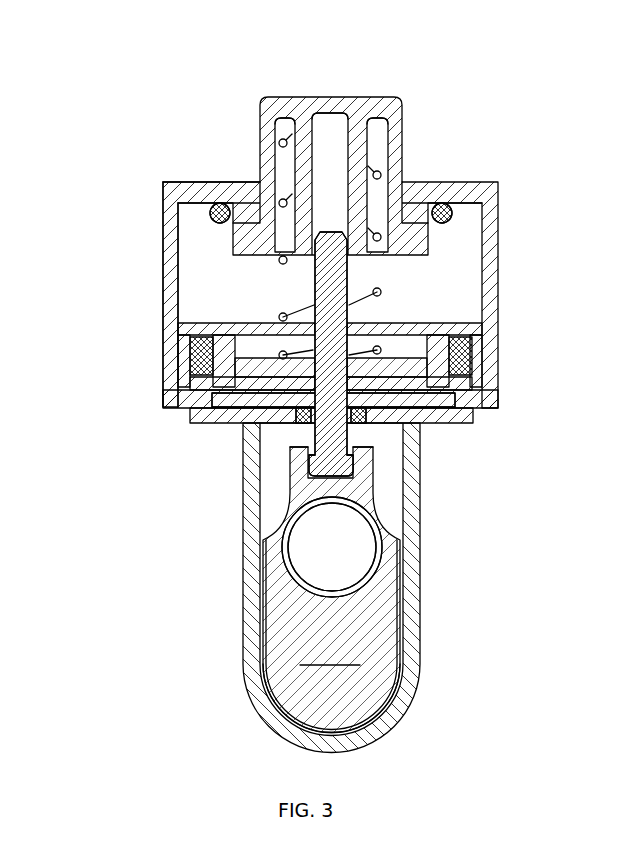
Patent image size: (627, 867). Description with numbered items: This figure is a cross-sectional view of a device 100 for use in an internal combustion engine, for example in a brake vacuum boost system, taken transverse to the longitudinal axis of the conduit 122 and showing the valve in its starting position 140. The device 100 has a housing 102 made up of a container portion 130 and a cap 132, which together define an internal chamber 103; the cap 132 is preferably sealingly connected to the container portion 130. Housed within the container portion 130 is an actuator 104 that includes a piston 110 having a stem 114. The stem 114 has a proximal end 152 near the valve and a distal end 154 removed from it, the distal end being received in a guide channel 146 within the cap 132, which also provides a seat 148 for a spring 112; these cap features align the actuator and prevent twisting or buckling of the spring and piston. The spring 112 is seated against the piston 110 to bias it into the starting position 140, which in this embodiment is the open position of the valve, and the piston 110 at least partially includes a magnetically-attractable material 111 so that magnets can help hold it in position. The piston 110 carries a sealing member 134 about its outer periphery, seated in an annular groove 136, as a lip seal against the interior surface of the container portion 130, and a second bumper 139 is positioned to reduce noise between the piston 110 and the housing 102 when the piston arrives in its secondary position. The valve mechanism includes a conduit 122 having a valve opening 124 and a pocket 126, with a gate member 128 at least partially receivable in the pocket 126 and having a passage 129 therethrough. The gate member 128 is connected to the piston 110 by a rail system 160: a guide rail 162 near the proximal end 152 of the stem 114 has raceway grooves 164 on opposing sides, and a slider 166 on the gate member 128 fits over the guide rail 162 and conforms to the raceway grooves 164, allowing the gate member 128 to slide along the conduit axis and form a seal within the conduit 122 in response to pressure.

The device 100 is at (462, 108).
The housing 102 is at (500, 210).
The internal chamber 103 is at (188, 262).
The actuator 104 is at (470, 262).
The piston 110 is at (482, 330).
The magnetically-attractable material 111 is at (247, 363).
The spring 112 is at (382, 178).
The stem 114 is at (312, 283).
The conduit 122 is at (420, 640).
The valve opening 124 is at (288, 549).
The pocket 126 is at (408, 688).
The gate member 128 is at (330, 655).
The passage 129 is at (378, 546).
The container portion 130 is at (162, 316).
The cap 132 is at (168, 182).
The sealing member 134 is at (472, 357).
The annular groove 136 is at (462, 372).
The second bumper 139 is at (222, 203).
The starting position 140 is at (478, 416).
The guide channel 146 is at (330, 112).
The seat 148 is at (275, 128).
The proximal end 152 is at (328, 478).
The distal end 154 is at (349, 252).
The rail system 160 is at (392, 483).
The guide rail 162 is at (368, 425).
The raceway grooves 164 is at (288, 450).
The slider 166 is at (300, 425).